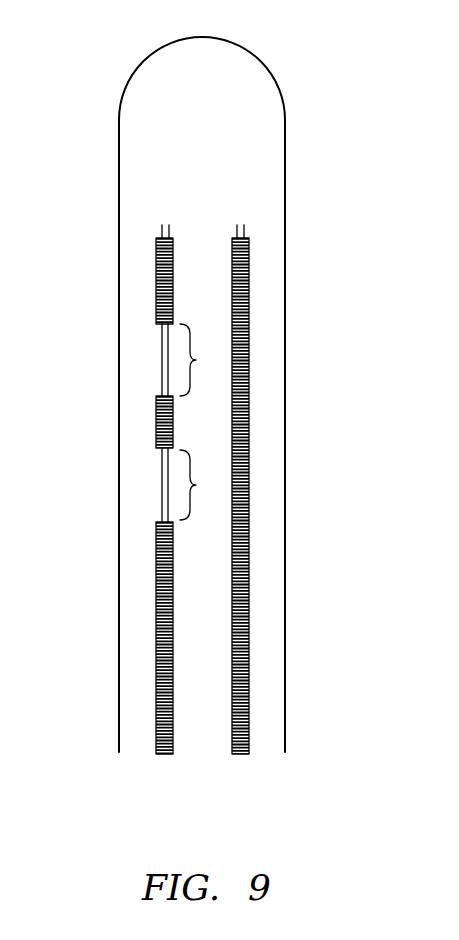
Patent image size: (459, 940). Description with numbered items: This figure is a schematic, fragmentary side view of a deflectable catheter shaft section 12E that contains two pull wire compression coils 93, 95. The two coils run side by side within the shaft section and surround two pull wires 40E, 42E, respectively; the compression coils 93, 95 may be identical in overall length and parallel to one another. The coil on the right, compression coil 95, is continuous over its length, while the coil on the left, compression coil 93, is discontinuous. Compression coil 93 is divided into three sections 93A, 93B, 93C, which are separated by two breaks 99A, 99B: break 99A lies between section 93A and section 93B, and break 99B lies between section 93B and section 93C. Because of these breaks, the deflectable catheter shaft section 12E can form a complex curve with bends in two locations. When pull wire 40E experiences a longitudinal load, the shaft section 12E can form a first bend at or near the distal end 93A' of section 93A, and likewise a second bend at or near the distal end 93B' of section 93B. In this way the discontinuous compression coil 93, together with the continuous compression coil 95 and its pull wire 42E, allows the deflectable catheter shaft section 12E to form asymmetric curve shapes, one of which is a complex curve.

The deflectable catheter shaft section 12E is at (288, 600).
The pull wire 40E is at (160, 232).
The pull wire 42E is at (246, 232).
The pull wire compression coil 93 is at (107, 486).
The section 93A is at (111, 638).
The distal end of section 93A 93A' is at (107, 491).
The section 93B is at (111, 423).
The distal end of section 93B 93B' is at (107, 365).
The section 93C is at (156, 271).
The pull wire compression coil 95 is at (292, 484).
The break 99A is at (197, 485).
The break 99B is at (197, 360).